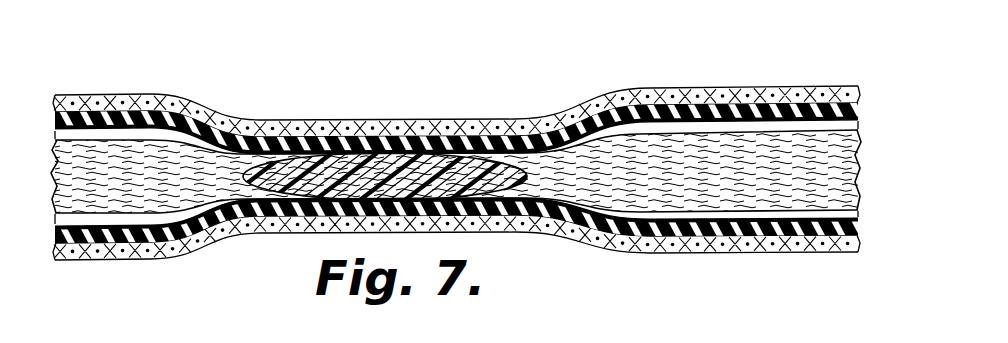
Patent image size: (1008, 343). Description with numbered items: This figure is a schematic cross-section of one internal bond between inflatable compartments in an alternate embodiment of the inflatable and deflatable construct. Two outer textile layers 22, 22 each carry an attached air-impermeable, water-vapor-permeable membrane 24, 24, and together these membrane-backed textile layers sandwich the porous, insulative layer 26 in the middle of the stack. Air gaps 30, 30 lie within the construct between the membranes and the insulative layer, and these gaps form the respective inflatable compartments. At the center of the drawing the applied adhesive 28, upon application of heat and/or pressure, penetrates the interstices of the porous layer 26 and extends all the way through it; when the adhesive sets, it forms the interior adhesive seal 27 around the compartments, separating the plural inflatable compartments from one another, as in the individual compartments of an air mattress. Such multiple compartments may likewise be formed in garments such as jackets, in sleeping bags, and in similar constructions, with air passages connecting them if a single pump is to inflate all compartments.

The textile layer 22 is at (808, 92).
The air-impermeable, water-vapor-permeable membrane 24 is at (833, 110).
The porous, insulative layer 26 is at (683, 167).
The adhesive seal 27 is at (428, 78).
The applied adhesive 28 is at (357, 187).
The air gap 30 is at (767, 127).